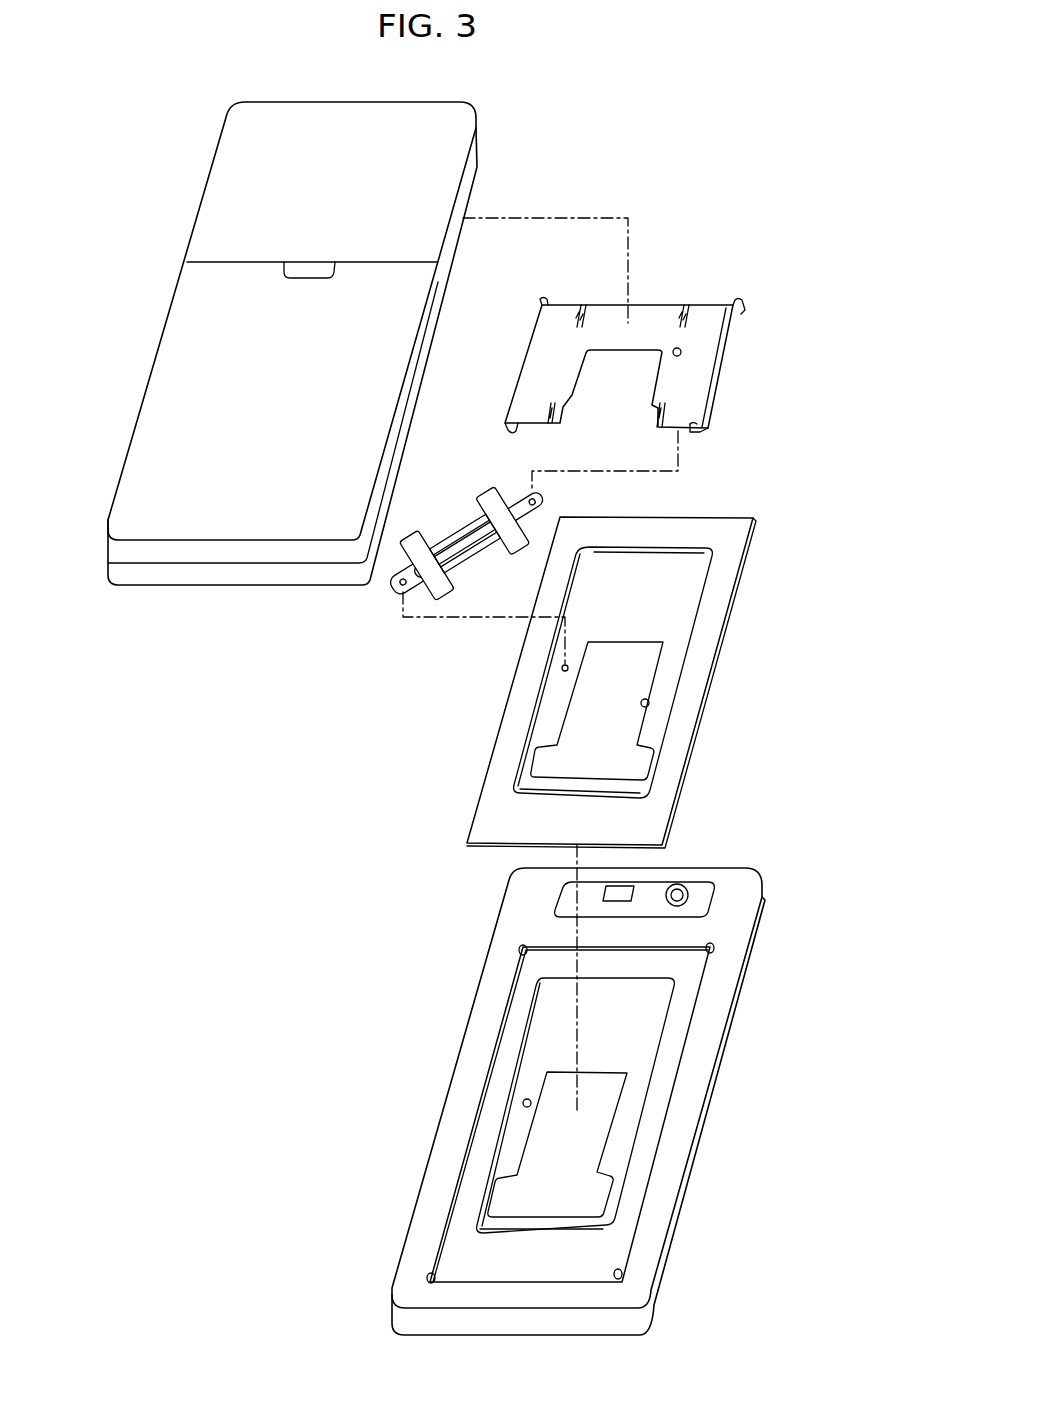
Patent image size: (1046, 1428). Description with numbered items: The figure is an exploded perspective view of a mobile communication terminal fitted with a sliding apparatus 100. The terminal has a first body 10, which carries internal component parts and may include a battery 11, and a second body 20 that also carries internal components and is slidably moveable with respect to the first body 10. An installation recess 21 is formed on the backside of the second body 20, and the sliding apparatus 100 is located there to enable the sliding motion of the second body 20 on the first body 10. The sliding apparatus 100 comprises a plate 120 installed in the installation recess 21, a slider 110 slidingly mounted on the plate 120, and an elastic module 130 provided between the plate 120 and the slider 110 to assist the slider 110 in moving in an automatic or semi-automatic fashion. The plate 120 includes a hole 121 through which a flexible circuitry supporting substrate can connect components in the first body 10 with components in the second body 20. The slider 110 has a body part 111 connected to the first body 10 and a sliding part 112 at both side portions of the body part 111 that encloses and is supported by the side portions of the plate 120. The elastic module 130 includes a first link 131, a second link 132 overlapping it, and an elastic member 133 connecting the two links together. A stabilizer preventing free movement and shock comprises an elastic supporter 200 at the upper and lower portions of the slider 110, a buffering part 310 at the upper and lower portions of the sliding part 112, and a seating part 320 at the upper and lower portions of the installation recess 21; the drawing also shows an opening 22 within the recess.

The sliding apparatus 100 is at (589, 140).
The first body 10 is at (225, 191).
The battery 11 is at (187, 318).
The slider 110 is at (742, 342).
The body part 111 is at (712, 370).
The sliding part 112 is at (715, 408).
The buffering part 310 is at (745, 304).
The elastic supporter 200 is at (588, 305).
The elastic module 130 is at (460, 504).
The first link 131 is at (392, 588).
The second link 132 is at (527, 497).
The elastic member 133 is at (447, 523).
The plate 120 is at (707, 638).
The hole 121 is at (645, 703).
The second body 20 is at (478, 1050).
The installation recess 21 is at (513, 985).
The opening in recess 22 is at (533, 1148).
The seating part 320 is at (512, 945).